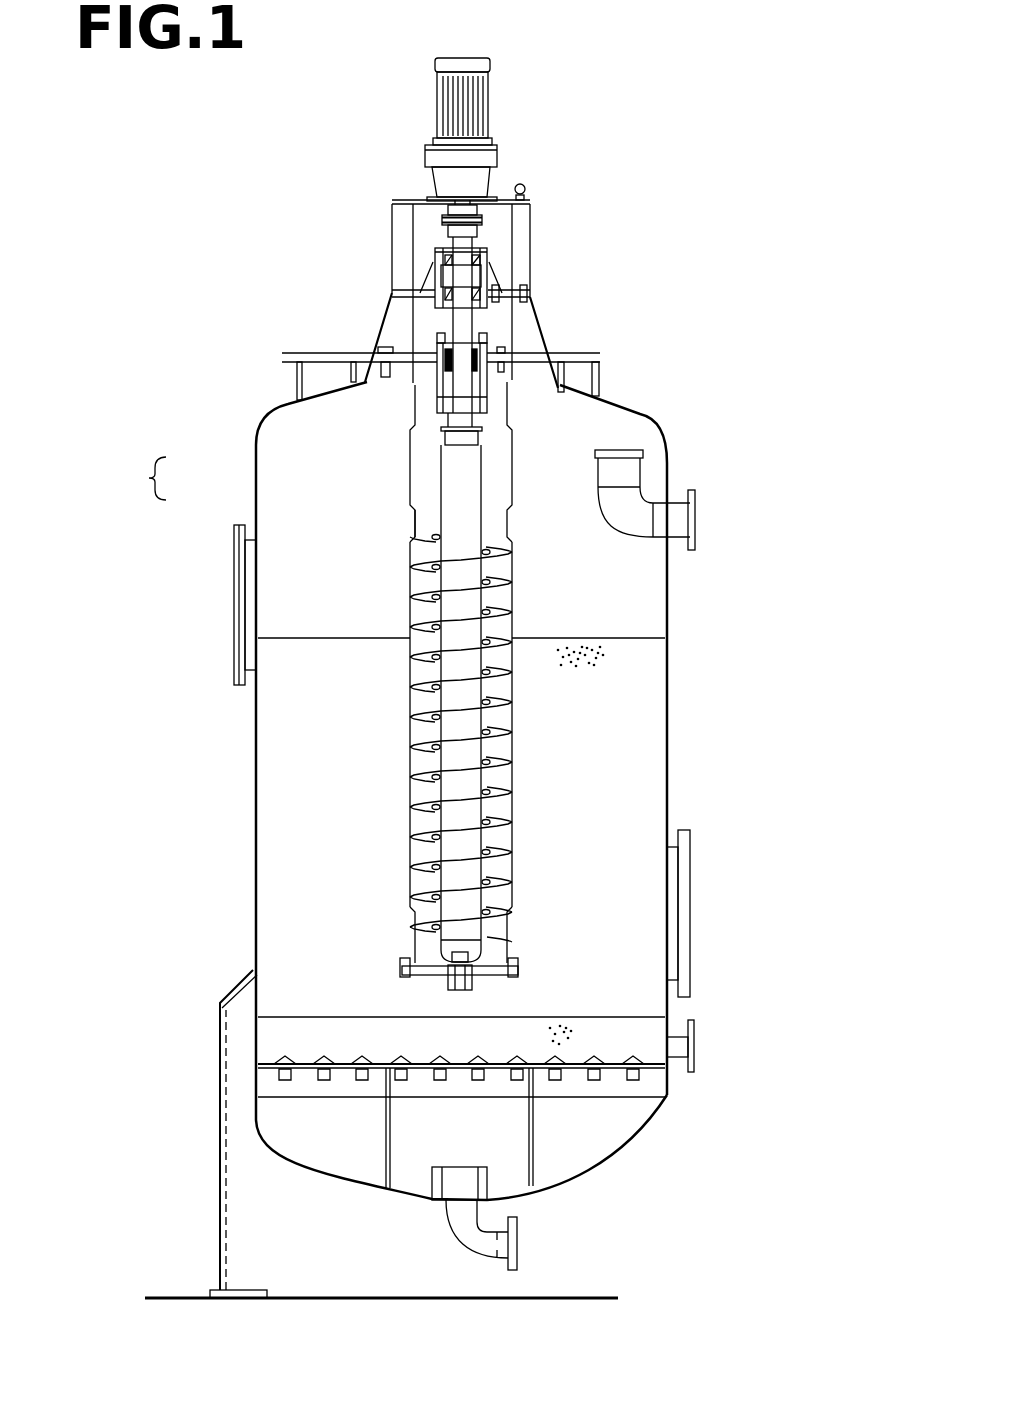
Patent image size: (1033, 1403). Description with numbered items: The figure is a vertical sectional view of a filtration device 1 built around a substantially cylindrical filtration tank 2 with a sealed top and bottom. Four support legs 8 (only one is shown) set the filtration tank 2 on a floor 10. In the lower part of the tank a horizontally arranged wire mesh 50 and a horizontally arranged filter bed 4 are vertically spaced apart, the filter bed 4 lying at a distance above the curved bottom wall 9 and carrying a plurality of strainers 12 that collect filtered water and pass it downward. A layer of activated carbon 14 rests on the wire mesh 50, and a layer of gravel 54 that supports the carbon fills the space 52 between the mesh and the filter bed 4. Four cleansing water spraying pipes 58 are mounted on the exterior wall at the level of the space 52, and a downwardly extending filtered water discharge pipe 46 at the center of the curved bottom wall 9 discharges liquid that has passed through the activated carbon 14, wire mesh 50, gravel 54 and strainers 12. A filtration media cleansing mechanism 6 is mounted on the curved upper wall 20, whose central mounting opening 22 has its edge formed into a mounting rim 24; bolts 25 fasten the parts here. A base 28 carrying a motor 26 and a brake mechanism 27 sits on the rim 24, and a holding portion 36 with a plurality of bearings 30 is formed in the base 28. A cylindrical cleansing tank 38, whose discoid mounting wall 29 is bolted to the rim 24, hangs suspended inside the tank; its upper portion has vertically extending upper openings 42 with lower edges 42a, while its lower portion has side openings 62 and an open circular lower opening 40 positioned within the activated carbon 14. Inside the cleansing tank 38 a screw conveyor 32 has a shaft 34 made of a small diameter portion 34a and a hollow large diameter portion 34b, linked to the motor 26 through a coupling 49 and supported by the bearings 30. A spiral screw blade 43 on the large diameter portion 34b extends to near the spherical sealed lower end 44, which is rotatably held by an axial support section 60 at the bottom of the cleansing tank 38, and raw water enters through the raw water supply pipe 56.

The filtration device 1 is at (432, 674).
The filtration tank 2 is at (680, 592).
The filter bed 4 is at (612, 1068).
The filtration media cleansing mechanism 6 is at (396, 264).
The support leg 8 is at (220, 1090).
The curved bottom wall 9 is at (598, 1172).
The floor 10 is at (578, 1298).
The strainer 12 is at (376, 1062).
The activated carbon 14 is at (615, 660).
The curved upper wall 20 is at (622, 405).
The mounting opening 22 is at (502, 347).
The mounting rim 24 is at (400, 352).
The bolt 25 is at (382, 352).
The motor 26 is at (492, 100).
The brake mechanism 27 is at (437, 185).
The base 28 is at (531, 245).
The mounting wall 29 is at (460, 292).
The bearing 30 is at (478, 290).
The screw conveyor 32 is at (478, 703).
The shaft 34 is at (138, 478).
The small diameter portion 34a is at (228, 463).
The large diameter portion 34b is at (410, 543).
The holding portion 36 is at (443, 268).
The cleansing tank 38 is at (386, 678).
The lower opening 40 is at (497, 965).
The upper opening 42 is at (512, 540).
The lower edge 42a is at (460, 583).
The screw blade 43 is at (497, 702).
The lower end 44 is at (452, 958).
The filtered water discharge pipe 46 is at (456, 1240).
The coupling 49 is at (470, 222).
The wire mesh 50 is at (587, 1017).
The space 52 is at (300, 1035).
The gravel 54 is at (562, 1048).
The raw water supply pipe 56 is at (672, 497).
The cleansing water spraying pipe 58 is at (672, 1060).
The axial support section 60 is at (443, 982).
The opening 62 is at (510, 915).